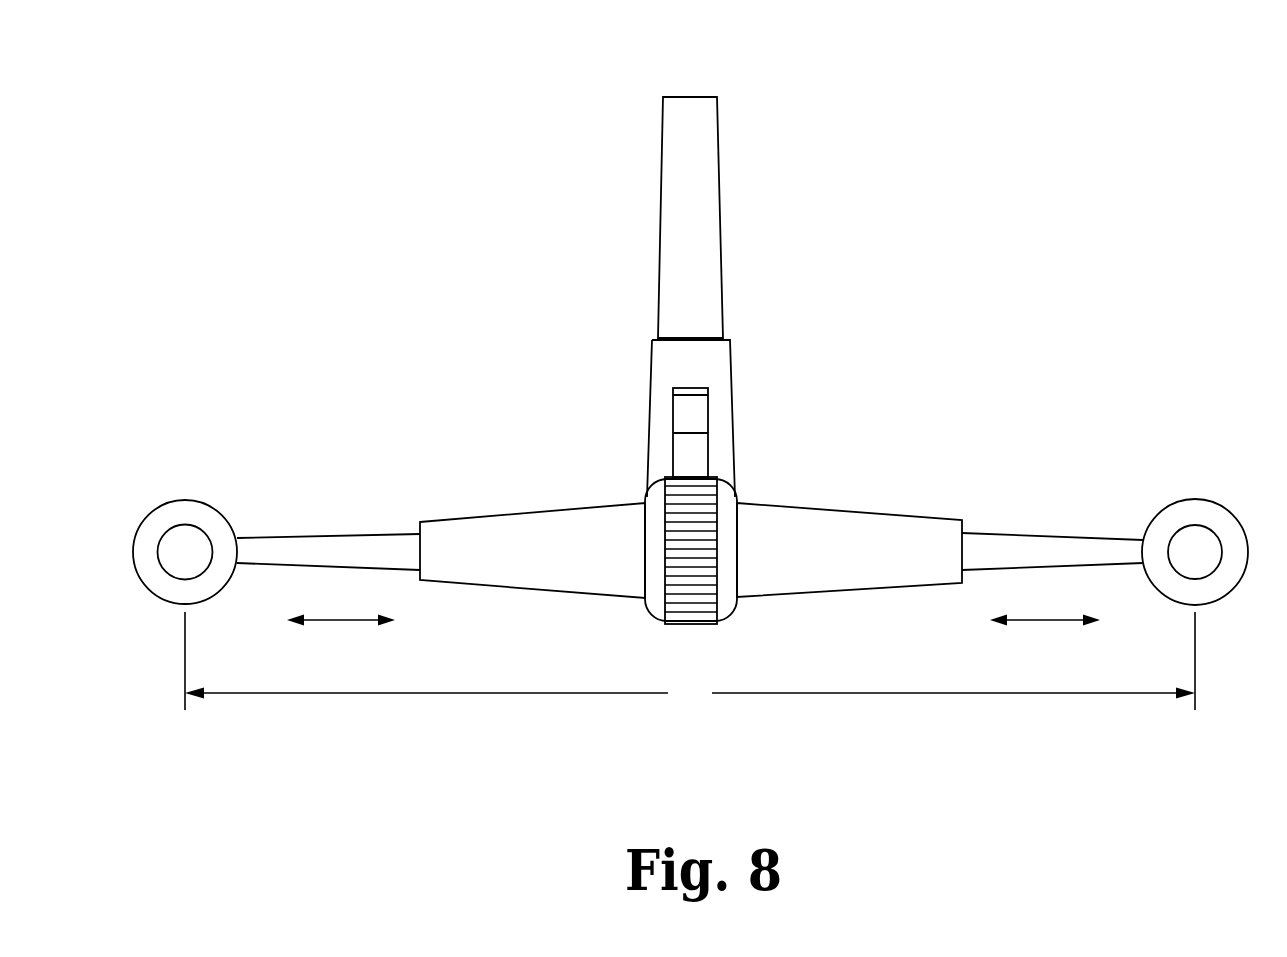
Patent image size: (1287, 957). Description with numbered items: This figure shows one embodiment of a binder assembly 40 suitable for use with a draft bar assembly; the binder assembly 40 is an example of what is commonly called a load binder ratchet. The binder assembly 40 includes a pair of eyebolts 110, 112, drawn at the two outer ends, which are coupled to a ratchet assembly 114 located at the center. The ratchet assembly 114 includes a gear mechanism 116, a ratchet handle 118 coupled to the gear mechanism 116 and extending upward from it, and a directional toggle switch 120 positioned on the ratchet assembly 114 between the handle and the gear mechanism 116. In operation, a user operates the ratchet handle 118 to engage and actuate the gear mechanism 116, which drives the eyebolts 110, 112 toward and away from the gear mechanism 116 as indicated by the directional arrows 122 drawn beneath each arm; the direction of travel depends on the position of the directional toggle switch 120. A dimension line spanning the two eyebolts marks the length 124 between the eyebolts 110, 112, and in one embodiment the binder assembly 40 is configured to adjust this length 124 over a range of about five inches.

The binder assembly 40 is at (997, 108).
The eyebolt 110 is at (1222, 500).
The eyebolt 112 is at (190, 500).
The ratchet assembly 114 is at (862, 322).
The gear mechanism 116 is at (737, 550).
The ratchet handle 118 is at (692, 160).
The directional toggle switch 120 is at (690, 408).
The directional arrows 122 is at (340, 622).
The length 124 is at (691, 710).